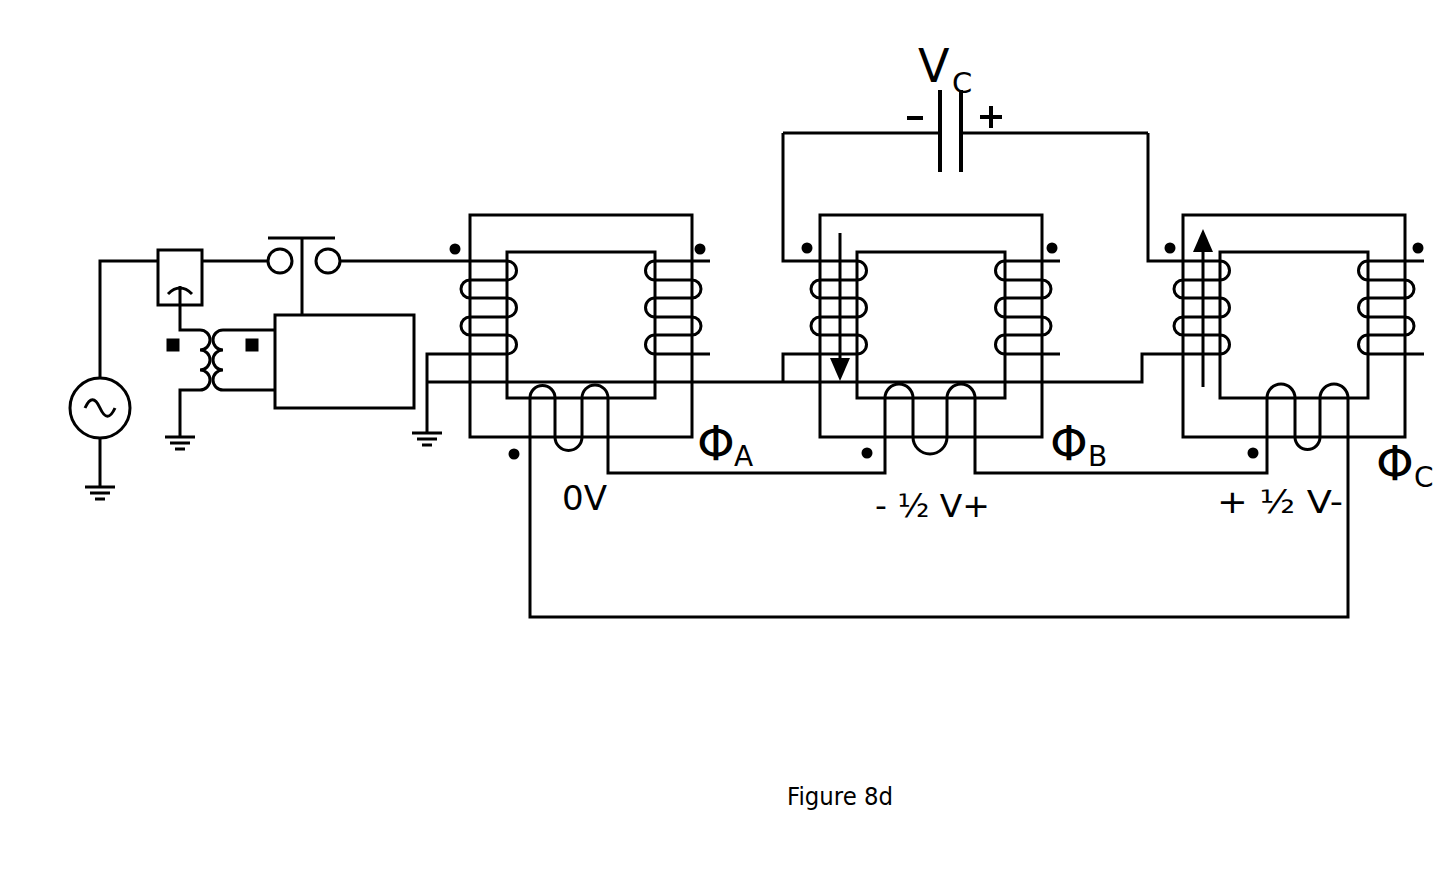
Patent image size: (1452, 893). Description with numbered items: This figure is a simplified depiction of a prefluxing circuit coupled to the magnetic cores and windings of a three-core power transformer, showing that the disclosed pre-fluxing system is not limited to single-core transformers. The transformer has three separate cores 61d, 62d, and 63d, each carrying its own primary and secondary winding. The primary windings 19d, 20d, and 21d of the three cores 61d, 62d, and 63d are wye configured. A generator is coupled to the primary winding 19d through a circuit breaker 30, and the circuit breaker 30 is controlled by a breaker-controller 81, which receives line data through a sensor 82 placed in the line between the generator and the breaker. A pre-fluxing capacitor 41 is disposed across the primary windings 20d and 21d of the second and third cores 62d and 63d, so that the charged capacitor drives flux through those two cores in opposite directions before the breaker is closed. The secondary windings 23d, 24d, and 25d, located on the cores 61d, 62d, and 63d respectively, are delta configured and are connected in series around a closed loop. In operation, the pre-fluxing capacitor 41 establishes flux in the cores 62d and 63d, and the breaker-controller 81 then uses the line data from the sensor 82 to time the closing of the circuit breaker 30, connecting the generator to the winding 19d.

The sensor 82 is at (186, 250).
The circuit breaker 30 is at (310, 238).
The breaker-controller 81 is at (320, 408).
The first core 61d is at (613, 227).
The primary winding 19d is at (518, 270).
The secondary winding 23d is at (595, 396).
The second core 62d is at (898, 227).
The primary winding 20d is at (868, 270).
The secondary winding 24d is at (948, 396).
The third core 63d is at (1317, 227).
The primary winding 21d is at (1232, 270).
The secondary winding 25d is at (1313, 396).
The pre-fluxing capacitor 41 is at (965, 100).